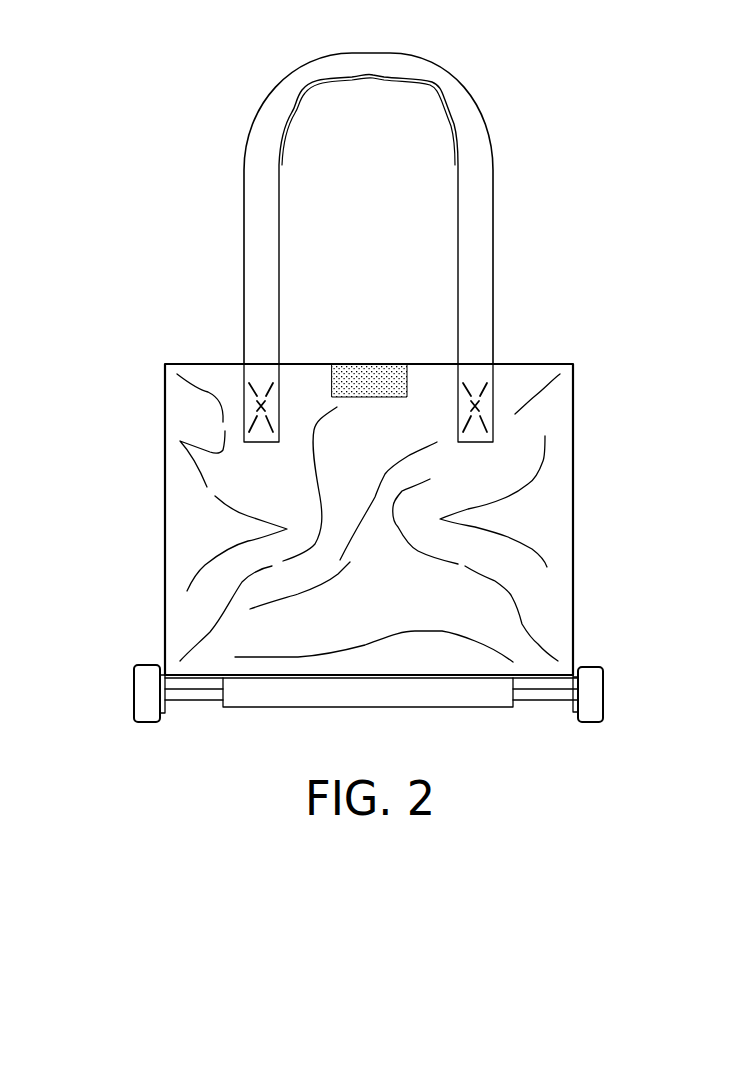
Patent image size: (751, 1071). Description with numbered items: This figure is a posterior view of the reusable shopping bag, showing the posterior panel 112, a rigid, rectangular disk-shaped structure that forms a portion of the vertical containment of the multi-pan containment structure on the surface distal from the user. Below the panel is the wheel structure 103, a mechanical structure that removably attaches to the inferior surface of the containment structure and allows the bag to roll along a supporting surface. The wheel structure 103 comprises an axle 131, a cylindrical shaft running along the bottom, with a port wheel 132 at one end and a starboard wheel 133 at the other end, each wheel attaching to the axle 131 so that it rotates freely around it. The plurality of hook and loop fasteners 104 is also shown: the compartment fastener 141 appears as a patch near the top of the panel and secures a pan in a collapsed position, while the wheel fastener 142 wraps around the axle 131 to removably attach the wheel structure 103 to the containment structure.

The wheel structure 103 is at (371, 739).
The plurality of hook and loop fasteners 104 is at (368, 405).
The posterior panel 112 is at (547, 532).
The axle 131 is at (538, 698).
The port wheel 132 is at (140, 692).
The starboard wheel 133 is at (595, 692).
The compartment fastener 141 is at (373, 378).
The wheel fastener 142 is at (315, 692).